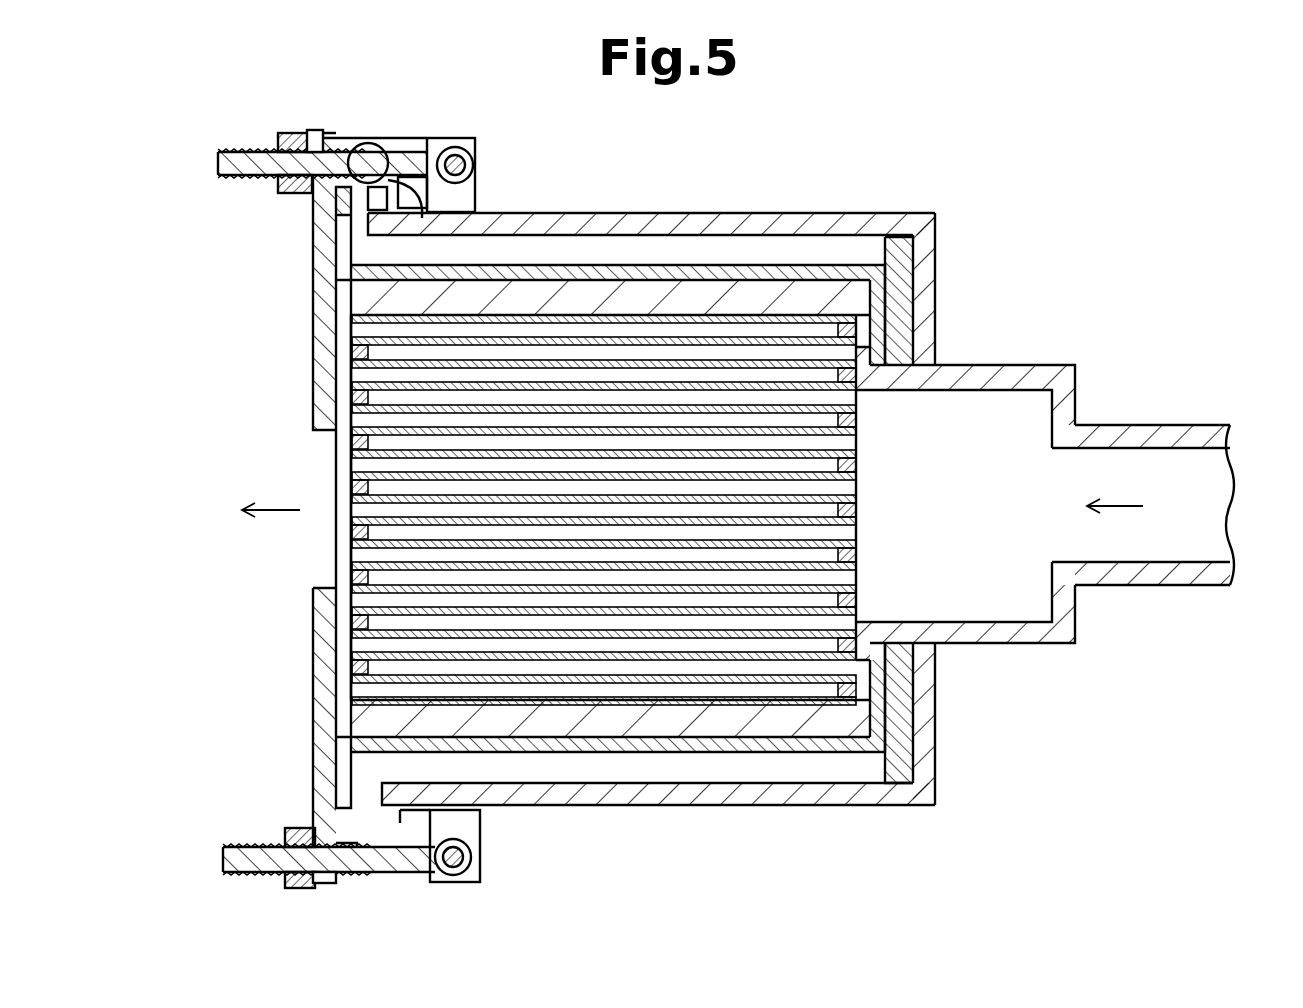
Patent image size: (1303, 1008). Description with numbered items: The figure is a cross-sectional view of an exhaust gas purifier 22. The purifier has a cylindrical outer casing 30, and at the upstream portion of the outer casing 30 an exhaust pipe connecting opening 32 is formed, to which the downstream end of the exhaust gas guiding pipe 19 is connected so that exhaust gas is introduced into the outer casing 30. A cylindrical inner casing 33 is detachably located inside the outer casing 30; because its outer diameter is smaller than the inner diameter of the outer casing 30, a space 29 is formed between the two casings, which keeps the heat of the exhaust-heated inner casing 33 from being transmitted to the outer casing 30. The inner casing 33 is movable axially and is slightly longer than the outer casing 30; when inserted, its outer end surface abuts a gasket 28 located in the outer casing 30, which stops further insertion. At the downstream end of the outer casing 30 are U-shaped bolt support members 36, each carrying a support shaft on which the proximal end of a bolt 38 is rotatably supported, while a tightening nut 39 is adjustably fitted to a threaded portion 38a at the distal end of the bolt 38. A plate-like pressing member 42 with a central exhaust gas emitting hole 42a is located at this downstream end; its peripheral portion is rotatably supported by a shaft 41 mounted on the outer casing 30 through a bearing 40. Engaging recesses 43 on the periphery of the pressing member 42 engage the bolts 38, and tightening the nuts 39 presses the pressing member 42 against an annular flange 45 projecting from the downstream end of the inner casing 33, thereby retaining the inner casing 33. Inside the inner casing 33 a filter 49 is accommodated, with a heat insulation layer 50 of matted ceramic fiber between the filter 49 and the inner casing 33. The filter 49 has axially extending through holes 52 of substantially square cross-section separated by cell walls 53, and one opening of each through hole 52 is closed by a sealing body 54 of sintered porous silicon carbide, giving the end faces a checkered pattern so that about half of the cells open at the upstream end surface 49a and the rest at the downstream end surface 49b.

The exhaust gas guiding pipe 19 is at (1190, 587).
The exhaust gas purifier 22 is at (887, 198).
The gasket 28 is at (913, 745).
The space 29 is at (727, 250).
The outer casing 30 is at (708, 807).
The exhaust pipe connecting opening 32 is at (1030, 645).
The inner casing 33 is at (668, 760).
The bolt support member 36 is at (475, 185).
The bolt 38 is at (222, 165).
The threaded portion 38a is at (238, 178).
The tightening nut 39 is at (292, 193).
The bearing 40 is at (420, 205).
The shaft 41 is at (392, 208).
The pressing member 42 is at (313, 303).
The exhaust gas emitting hole 42a is at (313, 432).
The engaging recess 43 is at (338, 150).
The annular flange 45 is at (350, 242).
The filter 49 is at (875, 484).
The upstream end surface 49a is at (858, 535).
The downstream end surface 49b is at (352, 556).
The heat insulation layer 50 is at (633, 290).
The through hole 52 is at (380, 625).
The cell wall 53 is at (385, 685).
The sealing body 54 is at (350, 398).